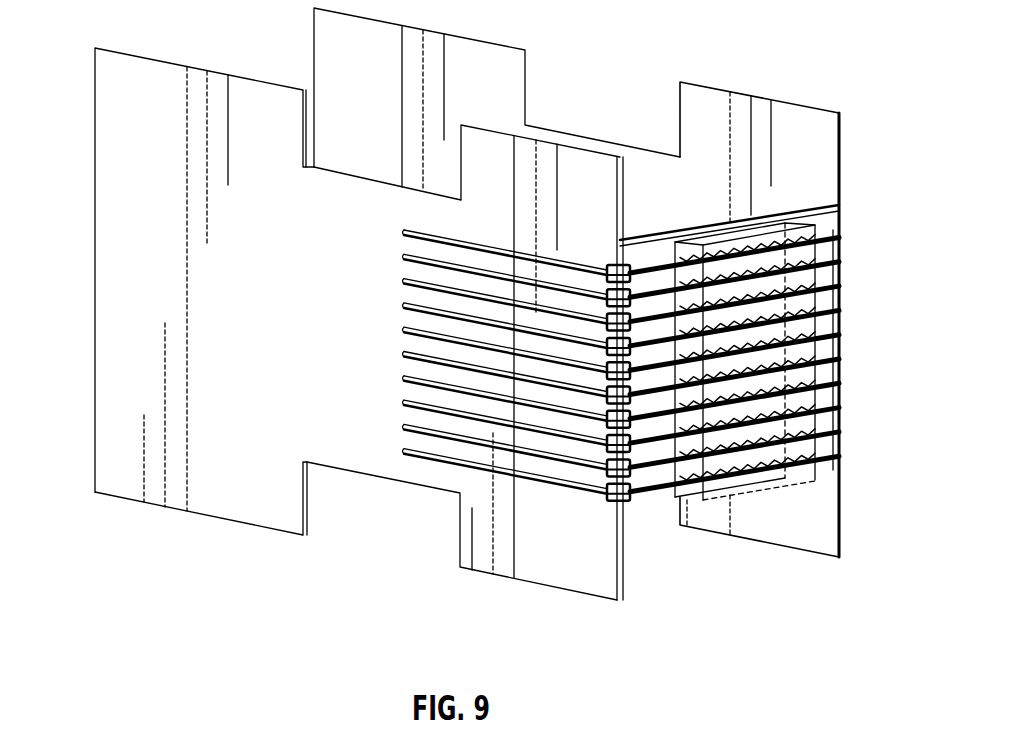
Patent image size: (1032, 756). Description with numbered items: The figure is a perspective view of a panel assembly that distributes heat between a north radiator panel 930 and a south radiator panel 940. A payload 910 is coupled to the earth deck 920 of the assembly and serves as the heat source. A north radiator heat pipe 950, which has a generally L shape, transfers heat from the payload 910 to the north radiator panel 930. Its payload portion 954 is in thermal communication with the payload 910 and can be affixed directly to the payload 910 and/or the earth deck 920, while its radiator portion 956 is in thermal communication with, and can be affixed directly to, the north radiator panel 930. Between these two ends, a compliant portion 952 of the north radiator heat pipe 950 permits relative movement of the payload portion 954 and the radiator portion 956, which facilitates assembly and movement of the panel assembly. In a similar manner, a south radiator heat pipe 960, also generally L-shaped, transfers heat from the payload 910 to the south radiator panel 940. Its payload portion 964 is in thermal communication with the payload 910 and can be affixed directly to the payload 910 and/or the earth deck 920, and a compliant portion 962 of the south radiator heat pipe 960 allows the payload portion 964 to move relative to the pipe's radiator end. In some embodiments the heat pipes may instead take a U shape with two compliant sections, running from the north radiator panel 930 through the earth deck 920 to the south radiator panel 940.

The payload 910 is at (790, 254).
The earth deck 920 is at (818, 222).
The north radiator panel 930 is at (122, 101).
The south radiator panel 940 is at (787, 143).
The north radiator heat pipe 950 is at (522, 478).
The compliant portion 952 is at (613, 508).
The payload portion 954 is at (670, 498).
The radiator portion 956 is at (443, 458).
The south radiator heat pipe 960 is at (818, 380).
The compliant portion 962 is at (840, 457).
The payload portion 964 is at (662, 478).